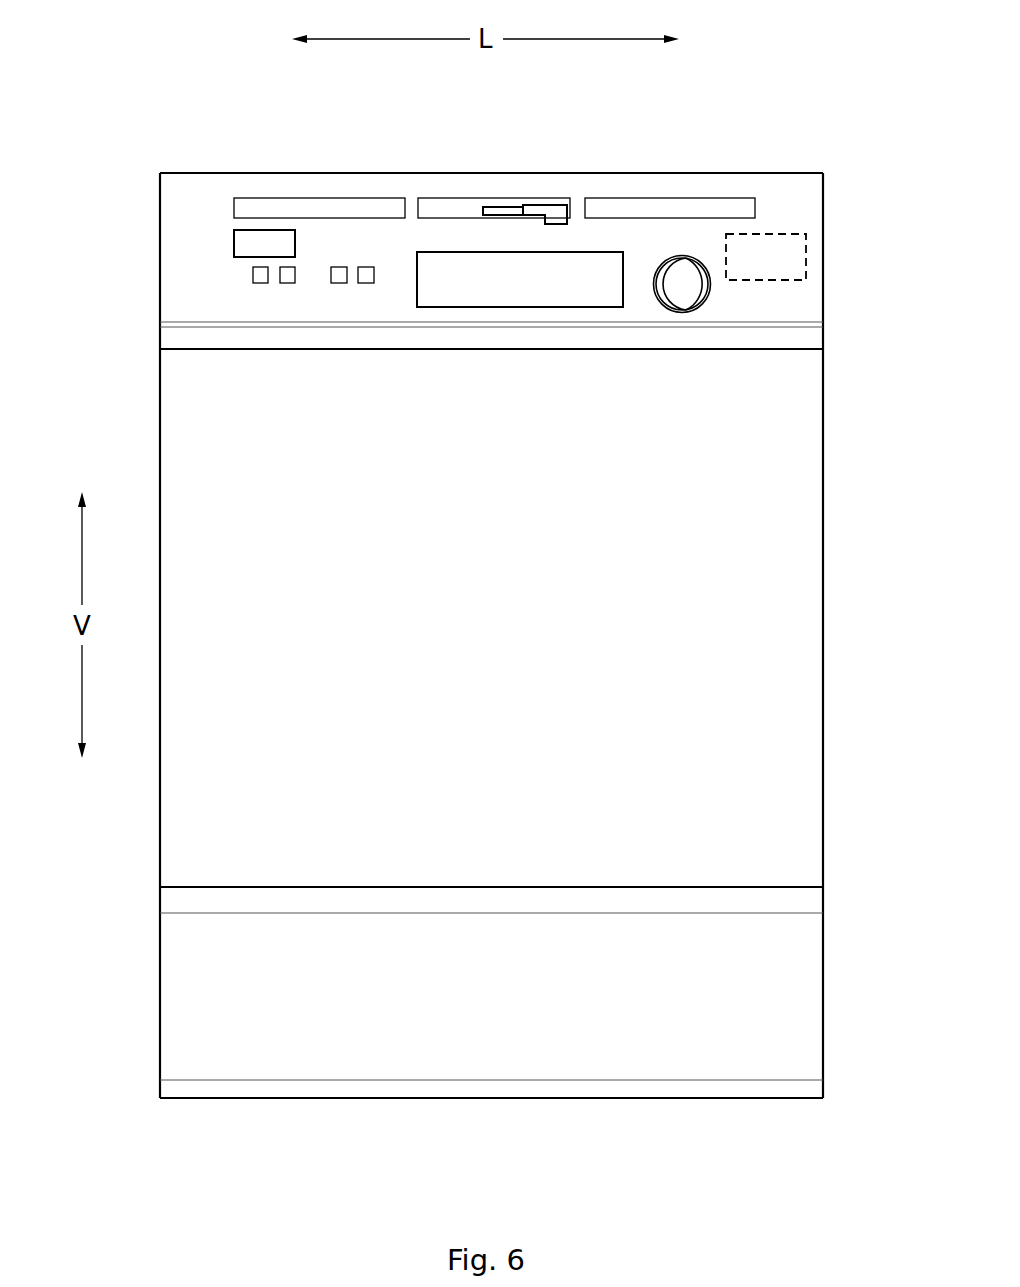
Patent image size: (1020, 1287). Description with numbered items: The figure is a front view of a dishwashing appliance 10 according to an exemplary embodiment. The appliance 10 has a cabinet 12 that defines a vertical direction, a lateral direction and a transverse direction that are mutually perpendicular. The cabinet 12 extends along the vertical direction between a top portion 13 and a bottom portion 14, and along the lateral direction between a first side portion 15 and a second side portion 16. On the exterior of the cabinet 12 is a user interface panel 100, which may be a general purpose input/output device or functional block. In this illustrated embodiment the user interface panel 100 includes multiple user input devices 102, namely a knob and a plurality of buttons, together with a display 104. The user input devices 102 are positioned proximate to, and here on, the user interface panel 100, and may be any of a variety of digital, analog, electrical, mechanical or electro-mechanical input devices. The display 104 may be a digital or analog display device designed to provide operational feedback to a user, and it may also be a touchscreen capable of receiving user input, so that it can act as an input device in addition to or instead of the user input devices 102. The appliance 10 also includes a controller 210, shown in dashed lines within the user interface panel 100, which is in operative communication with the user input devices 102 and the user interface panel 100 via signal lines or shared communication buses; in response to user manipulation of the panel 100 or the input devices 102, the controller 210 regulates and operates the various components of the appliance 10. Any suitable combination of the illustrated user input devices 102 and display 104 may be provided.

The appliance 10 is at (742, 134).
The cabinet 12 is at (768, 598).
The top portion 13 is at (117, 172).
The bottom portion 14 is at (117, 1101).
The first side portion 15 is at (134, 420).
The second side portion 16 is at (846, 441).
The user interface panel 100 is at (797, 223).
The user input device 102 is at (340, 267).
The display component 104 is at (234, 243).
The controller 210 is at (807, 257).